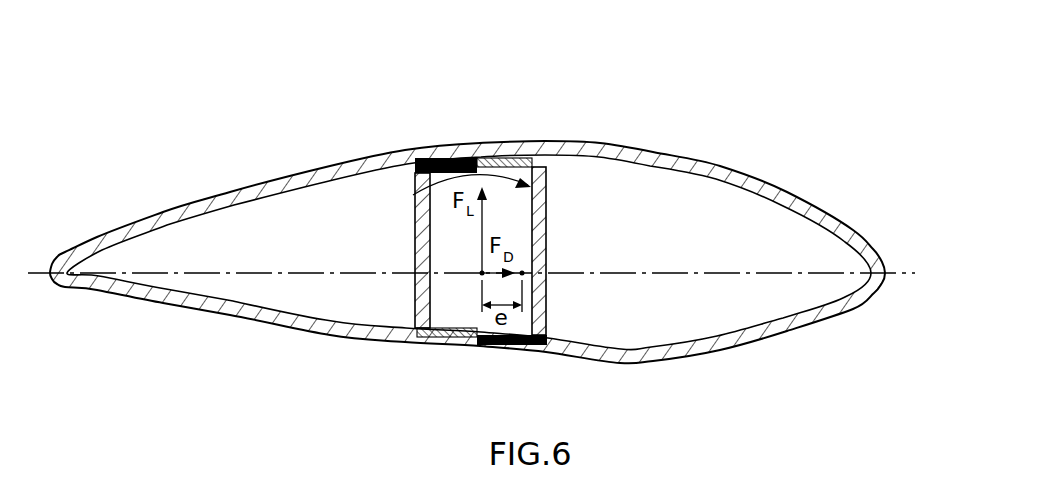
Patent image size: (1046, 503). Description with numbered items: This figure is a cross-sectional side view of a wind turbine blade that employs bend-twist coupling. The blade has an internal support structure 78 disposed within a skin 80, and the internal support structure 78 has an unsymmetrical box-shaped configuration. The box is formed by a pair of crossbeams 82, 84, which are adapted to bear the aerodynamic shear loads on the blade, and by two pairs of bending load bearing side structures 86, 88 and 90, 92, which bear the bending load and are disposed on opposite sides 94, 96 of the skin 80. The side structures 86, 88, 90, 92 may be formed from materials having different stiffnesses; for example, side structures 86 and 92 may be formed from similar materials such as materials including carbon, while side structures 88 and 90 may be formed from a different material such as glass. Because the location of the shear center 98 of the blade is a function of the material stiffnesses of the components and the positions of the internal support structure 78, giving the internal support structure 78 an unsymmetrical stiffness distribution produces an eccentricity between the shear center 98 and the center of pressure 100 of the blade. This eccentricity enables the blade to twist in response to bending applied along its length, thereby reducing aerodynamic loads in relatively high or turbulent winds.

The internal support structure 78 is at (413, 195).
The skin 80 is at (602, 148).
The crossbeam 82 is at (417, 322).
The crossbeam 84 is at (546, 178).
The bending load bearing side structure 86 is at (415, 166).
The bending load bearing side structure 88 is at (511, 152).
The bending load bearing side structure 90 is at (398, 333).
The bending load bearing side structure 92 is at (566, 348).
The side of the skin 94 is at (224, 223).
The side of the skin 96 is at (252, 298).
The shear center 98 is at (523, 271).
The center of pressure 100 is at (458, 337).